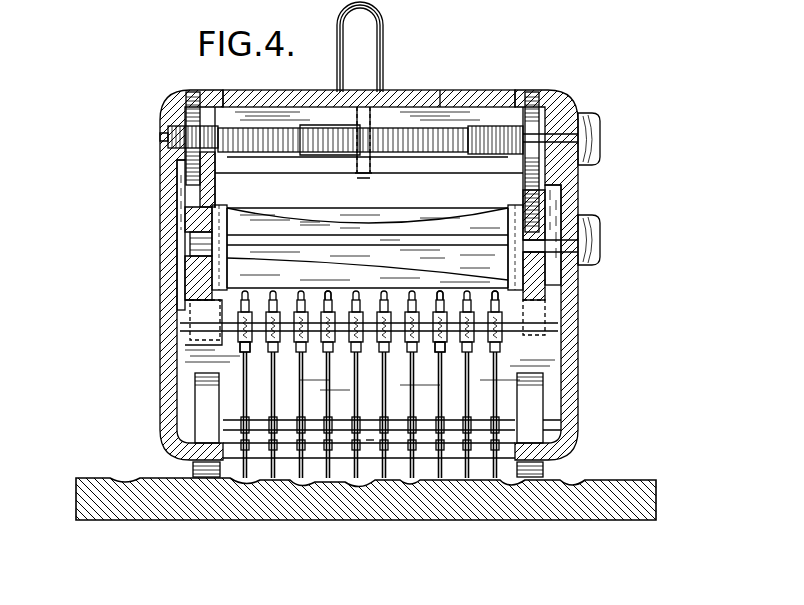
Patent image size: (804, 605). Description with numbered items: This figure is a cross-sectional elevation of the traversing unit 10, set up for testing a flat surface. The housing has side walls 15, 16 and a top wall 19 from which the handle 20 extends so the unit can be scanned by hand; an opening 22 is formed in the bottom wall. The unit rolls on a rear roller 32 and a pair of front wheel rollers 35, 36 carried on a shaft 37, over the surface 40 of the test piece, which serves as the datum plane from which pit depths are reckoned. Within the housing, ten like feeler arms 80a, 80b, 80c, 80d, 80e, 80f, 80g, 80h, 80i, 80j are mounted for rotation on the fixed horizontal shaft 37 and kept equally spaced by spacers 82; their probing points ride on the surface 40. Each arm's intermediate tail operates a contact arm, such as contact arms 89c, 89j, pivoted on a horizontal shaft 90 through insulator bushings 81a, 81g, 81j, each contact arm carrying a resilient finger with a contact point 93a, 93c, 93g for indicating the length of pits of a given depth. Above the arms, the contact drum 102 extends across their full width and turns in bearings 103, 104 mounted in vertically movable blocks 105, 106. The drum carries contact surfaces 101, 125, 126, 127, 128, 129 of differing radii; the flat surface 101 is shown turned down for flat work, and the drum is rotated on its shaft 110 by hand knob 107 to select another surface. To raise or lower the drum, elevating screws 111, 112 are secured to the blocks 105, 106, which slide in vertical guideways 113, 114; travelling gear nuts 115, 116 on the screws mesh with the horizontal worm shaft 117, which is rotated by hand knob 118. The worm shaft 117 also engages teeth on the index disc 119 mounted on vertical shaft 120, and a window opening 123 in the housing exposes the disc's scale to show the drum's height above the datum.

The tooth brush device 10 is at (356, 262).
The side wall 15 is at (565, 349).
The side wall 16 is at (170, 353).
The top wall 19 is at (236, 92).
The handle 20 is at (372, 37).
The opening 22 is at (230, 462).
The roller 32 is at (368, 480).
The front wheel roller 35 is at (525, 394).
The front wheel roller 36 is at (205, 401).
The shaft 37 is at (548, 421).
The surface 40 is at (545, 472).
The feeler arm 80a is at (495, 480).
The feeler arm 80b is at (467, 480).
The feeler arm 80c is at (440, 480).
The feeler arm 80d is at (412, 480).
The feeler arm 80e is at (385, 480).
The feeler arm 80f is at (356, 480).
The feeler arm 80g is at (328, 480).
The feeler arm 80h is at (301, 480).
The feeler arm 80i is at (273, 480).
The feeler arm 80j is at (244, 480).
The insulator bushing 81a is at (489, 345).
The insulator bushing 81g is at (325, 346).
The insulator bushing 81j is at (242, 320).
The spacer 82 is at (290, 420).
The contact arm 89c is at (441, 350).
The contact arm 89j is at (246, 350).
The shaft 90 is at (182, 328).
The contact point 93a is at (493, 298).
The contact point 93c is at (440, 296).
The contact point 93g is at (330, 296).
The contact surface 101 is at (262, 238).
The contact drum 102 is at (223, 233).
The bearing 103 is at (516, 236).
The bearing 104 is at (192, 245).
The vertically movable block 105 is at (545, 300).
The vertically movable block 106 is at (200, 271).
The hand knob 107 is at (595, 258).
The shaft 110 is at (582, 246).
The elevating screw 111 is at (540, 112).
The elevating screw 112 is at (190, 110).
The vertical guideway 113 is at (556, 194).
The vertical guideway 114 is at (180, 188).
The gear nut 115 is at (548, 135).
The gear nut 116 is at (180, 135).
The worm shaft 117 is at (492, 126).
The hand knob 118 is at (588, 139).
The index disc 119 is at (318, 126).
The vertical shaft 120 is at (372, 112).
The window opening 123 is at (440, 92).
The contact surface 125 is at (470, 268).
The contact surface 126 is at (430, 260).
The contact surface 127 is at (385, 242).
The contact surface 128 is at (345, 228).
The contact surface 129 is at (300, 222).